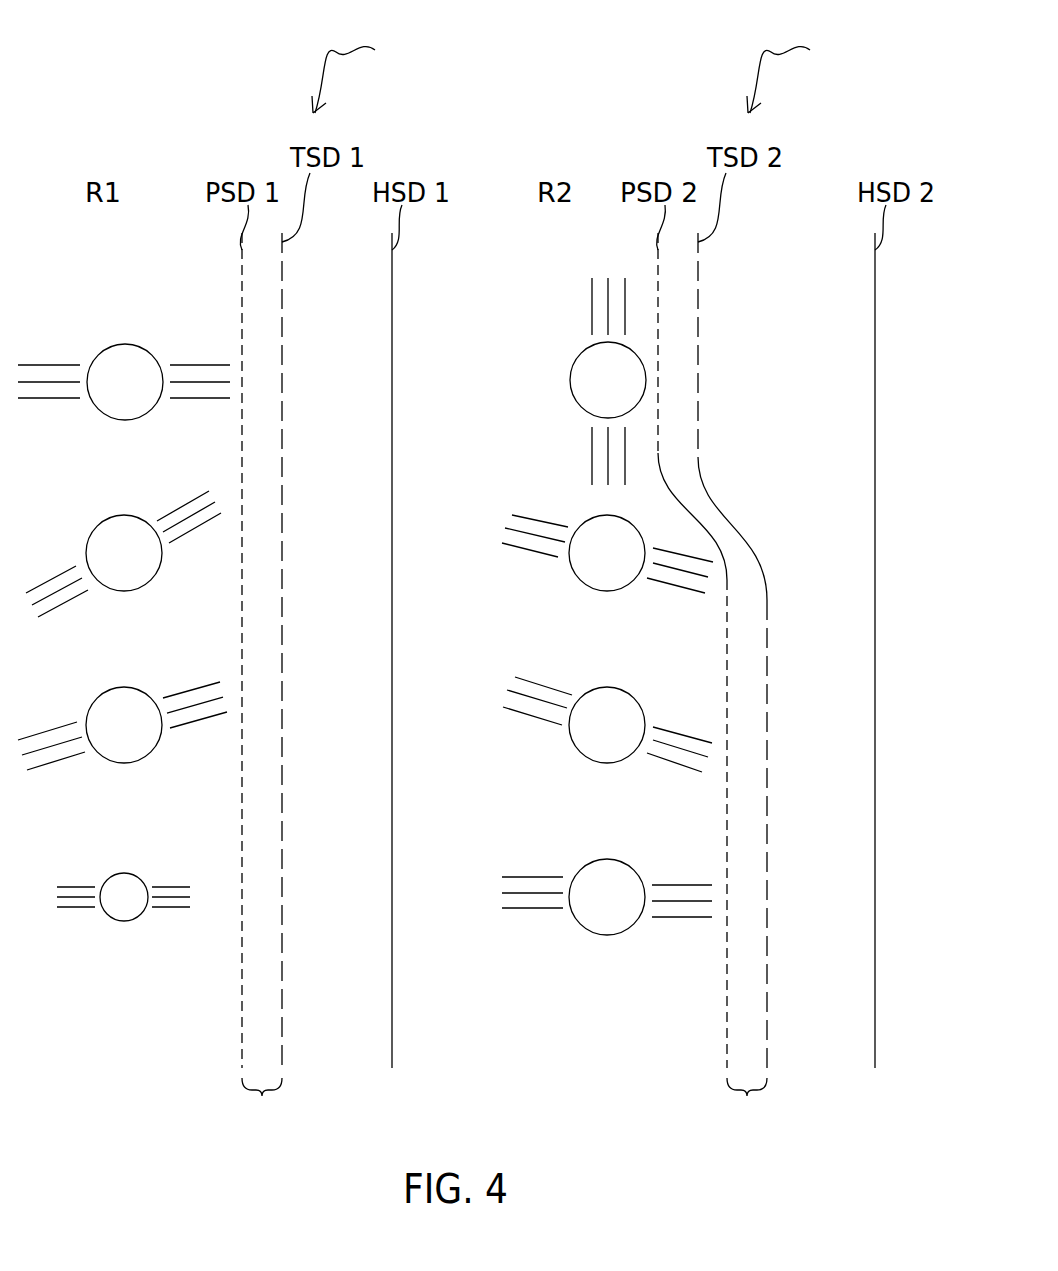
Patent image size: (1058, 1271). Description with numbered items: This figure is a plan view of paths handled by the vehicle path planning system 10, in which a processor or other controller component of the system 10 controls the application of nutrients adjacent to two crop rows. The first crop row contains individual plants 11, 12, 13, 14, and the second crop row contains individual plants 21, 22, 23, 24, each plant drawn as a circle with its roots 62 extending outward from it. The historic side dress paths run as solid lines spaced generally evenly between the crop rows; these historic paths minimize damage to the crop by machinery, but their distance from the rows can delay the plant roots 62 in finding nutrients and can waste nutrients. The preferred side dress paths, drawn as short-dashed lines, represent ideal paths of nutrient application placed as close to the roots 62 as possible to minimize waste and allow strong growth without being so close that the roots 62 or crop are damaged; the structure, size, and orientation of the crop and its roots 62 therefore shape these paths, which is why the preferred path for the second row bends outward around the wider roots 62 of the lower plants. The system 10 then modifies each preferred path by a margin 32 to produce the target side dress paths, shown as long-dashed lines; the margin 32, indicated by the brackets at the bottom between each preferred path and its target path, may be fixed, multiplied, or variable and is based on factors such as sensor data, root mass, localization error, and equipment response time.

The system 10 is at (581, 72).
The individual plant 11 is at (141, 397).
The individual plant 12 is at (140, 568).
The individual plant 13 is at (140, 740).
The individual plant 14 is at (139, 911).
The individual plant 21 is at (624, 395).
The individual plant 22 is at (623, 568).
The individual plant 23 is at (623, 740).
The individual plant 24 is at (623, 912).
The margin 32 is at (504, 1103).
The roots 62 is at (47, 400).